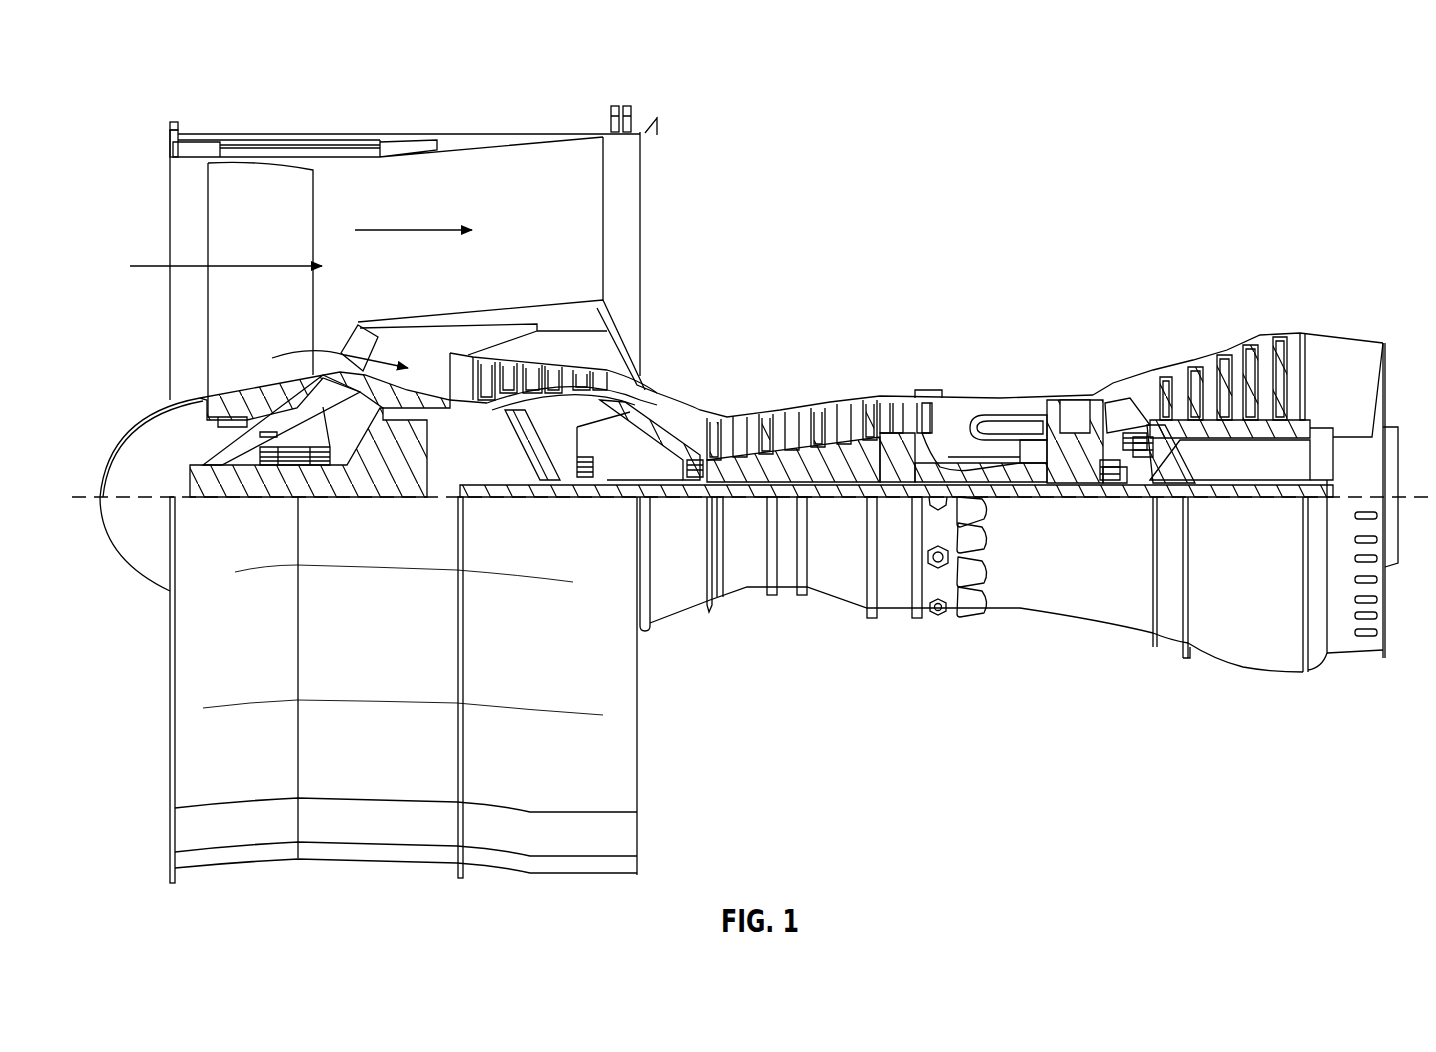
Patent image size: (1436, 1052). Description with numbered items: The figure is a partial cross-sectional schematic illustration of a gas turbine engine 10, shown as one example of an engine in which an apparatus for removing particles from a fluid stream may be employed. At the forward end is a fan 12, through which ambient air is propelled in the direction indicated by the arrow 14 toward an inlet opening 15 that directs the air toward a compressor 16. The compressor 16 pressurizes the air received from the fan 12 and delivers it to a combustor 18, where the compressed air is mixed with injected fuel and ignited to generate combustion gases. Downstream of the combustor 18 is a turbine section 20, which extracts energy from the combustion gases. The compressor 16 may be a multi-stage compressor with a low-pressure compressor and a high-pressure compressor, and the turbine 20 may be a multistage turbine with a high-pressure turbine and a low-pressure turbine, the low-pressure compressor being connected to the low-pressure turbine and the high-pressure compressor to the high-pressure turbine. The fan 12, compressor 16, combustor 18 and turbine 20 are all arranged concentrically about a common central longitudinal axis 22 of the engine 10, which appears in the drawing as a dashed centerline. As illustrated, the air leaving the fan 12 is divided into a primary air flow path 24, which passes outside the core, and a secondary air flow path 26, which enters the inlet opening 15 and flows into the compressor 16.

The gas turbine engine 10 is at (1348, 66).
The fan 12 is at (170, 90).
The arrow 14 is at (150, 265).
The inlet opening 15 is at (355, 322).
The compressor 16 is at (437, 90).
The combustor 18 is at (963, 90).
The turbine section 20 is at (1045, 90).
The central longitudinal axis 22 is at (1435, 497).
The primary air flow path 24 is at (420, 228).
The secondary air flow path 26 is at (292, 358).